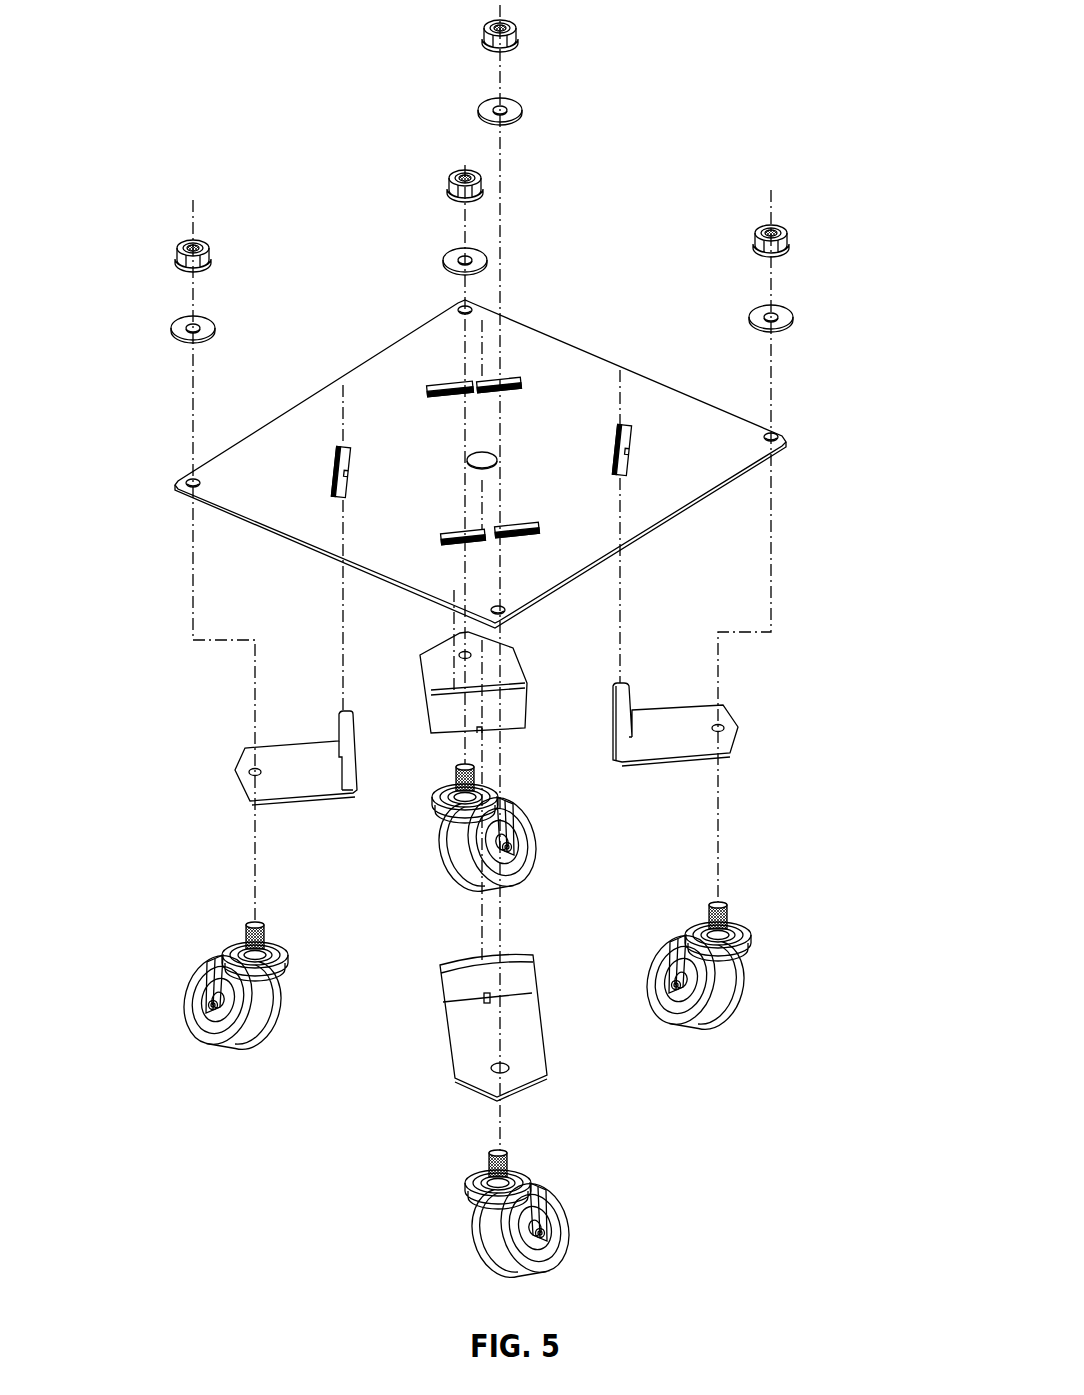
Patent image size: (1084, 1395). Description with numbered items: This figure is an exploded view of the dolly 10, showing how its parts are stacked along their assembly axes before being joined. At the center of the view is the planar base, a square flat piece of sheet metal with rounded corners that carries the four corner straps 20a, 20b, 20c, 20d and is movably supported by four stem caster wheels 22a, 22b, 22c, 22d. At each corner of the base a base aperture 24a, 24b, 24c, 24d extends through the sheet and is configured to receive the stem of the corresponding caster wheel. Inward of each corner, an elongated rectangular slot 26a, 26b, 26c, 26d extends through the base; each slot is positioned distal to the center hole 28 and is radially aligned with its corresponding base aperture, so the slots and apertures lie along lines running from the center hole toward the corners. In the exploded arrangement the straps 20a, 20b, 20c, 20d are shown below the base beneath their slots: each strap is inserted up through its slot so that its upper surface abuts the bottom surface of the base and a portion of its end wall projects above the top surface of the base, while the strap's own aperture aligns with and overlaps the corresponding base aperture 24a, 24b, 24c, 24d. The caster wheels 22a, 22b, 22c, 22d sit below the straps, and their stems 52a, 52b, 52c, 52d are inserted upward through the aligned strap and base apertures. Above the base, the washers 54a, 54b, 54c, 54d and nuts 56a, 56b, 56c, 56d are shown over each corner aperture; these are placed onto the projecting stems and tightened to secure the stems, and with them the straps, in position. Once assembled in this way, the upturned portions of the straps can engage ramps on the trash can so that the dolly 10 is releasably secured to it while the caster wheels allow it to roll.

The dolly 10 is at (140, 52).
The corner strap 20a is at (525, 1022).
The corner strap 20b is at (680, 718).
The corner strap 20c is at (505, 668).
The corner strap 20d is at (280, 762).
The stem caster wheel 22a is at (485, 1243).
The stem caster wheel 22b is at (730, 1000).
The stem caster wheel 22c is at (452, 855).
The stem caster wheel 22d is at (263, 1010).
The base aperture 24a is at (502, 606).
The base aperture 24b is at (782, 437).
The base aperture 24c is at (472, 306).
The base aperture 24d is at (188, 481).
The elongated rectangular slot 26a is at (517, 538).
The elongated rectangular slot 26b is at (630, 432).
The elongated rectangular slot 26c is at (440, 386).
The elongated rectangular slot 26d is at (335, 462).
The center hole 28 is at (472, 455).
The stem 52a is at (492, 1160).
The stem 52b is at (745, 910).
The stem 52c is at (440, 795).
The stem 52d is at (250, 932).
The washer 54a is at (510, 102).
The washer 54b is at (783, 316).
The washer 54c is at (455, 258).
The washer 54d is at (178, 325).
The nut 56a is at (512, 40).
The nut 56b is at (788, 245).
The nut 56c is at (452, 188).
The nut 56d is at (178, 257).